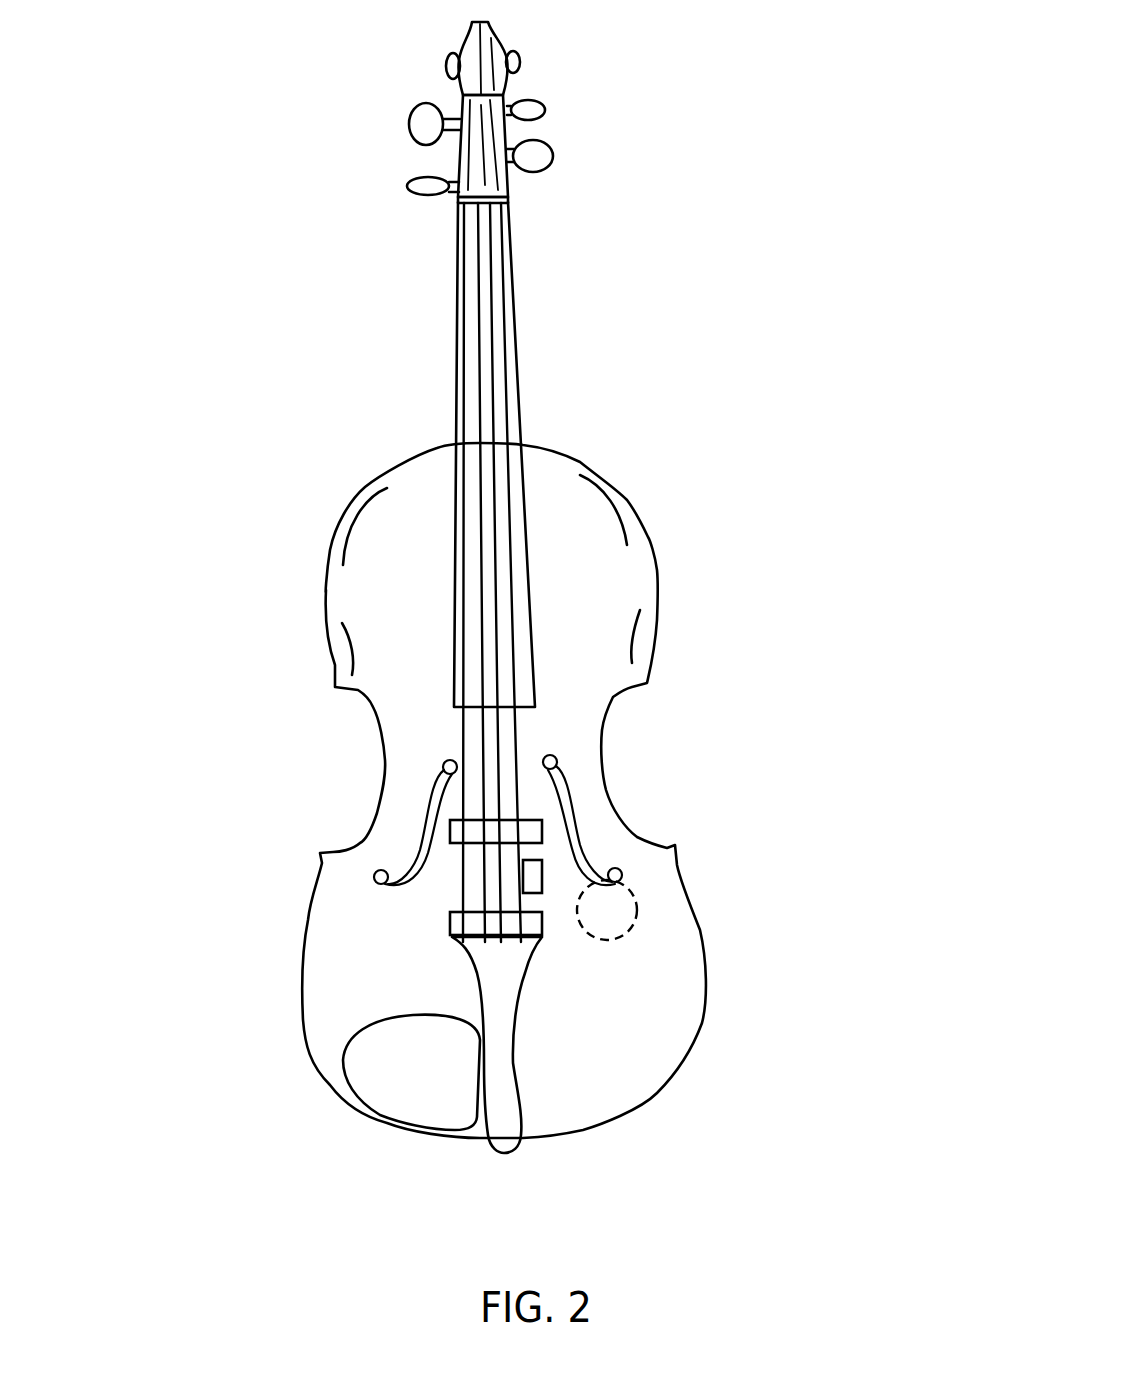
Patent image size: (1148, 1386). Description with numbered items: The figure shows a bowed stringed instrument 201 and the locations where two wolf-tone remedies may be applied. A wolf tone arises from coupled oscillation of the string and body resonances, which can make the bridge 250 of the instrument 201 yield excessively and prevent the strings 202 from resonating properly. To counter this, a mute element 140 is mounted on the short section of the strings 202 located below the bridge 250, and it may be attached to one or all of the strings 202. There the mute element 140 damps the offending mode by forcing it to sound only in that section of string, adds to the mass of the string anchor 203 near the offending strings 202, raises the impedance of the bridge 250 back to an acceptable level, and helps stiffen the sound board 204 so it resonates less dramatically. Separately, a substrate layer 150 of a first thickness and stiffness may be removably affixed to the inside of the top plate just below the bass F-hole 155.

The instrument 201 is at (250, 257).
The strings 202 is at (647, 627).
The string anchor 203 is at (508, 1115).
The sound board 204 is at (573, 558).
The mute element 140 is at (517, 876).
The substrate layer 150 is at (608, 910).
The bass F-hole 155 is at (578, 807).
The bridge 250 is at (450, 830).